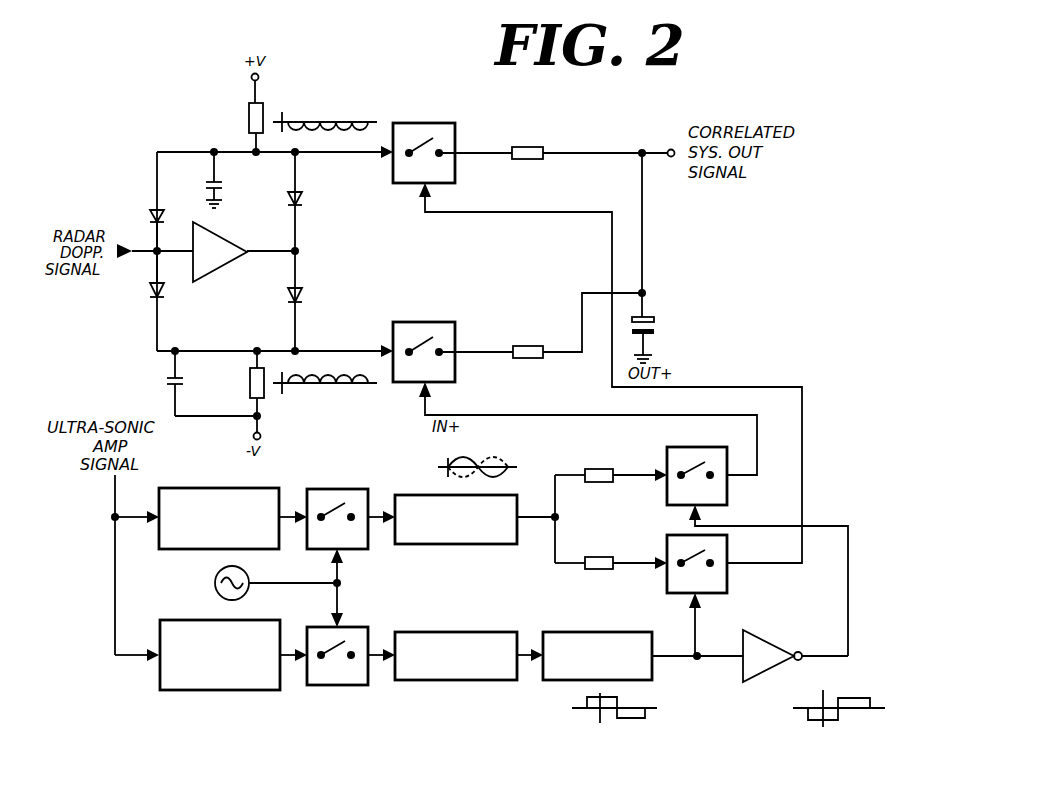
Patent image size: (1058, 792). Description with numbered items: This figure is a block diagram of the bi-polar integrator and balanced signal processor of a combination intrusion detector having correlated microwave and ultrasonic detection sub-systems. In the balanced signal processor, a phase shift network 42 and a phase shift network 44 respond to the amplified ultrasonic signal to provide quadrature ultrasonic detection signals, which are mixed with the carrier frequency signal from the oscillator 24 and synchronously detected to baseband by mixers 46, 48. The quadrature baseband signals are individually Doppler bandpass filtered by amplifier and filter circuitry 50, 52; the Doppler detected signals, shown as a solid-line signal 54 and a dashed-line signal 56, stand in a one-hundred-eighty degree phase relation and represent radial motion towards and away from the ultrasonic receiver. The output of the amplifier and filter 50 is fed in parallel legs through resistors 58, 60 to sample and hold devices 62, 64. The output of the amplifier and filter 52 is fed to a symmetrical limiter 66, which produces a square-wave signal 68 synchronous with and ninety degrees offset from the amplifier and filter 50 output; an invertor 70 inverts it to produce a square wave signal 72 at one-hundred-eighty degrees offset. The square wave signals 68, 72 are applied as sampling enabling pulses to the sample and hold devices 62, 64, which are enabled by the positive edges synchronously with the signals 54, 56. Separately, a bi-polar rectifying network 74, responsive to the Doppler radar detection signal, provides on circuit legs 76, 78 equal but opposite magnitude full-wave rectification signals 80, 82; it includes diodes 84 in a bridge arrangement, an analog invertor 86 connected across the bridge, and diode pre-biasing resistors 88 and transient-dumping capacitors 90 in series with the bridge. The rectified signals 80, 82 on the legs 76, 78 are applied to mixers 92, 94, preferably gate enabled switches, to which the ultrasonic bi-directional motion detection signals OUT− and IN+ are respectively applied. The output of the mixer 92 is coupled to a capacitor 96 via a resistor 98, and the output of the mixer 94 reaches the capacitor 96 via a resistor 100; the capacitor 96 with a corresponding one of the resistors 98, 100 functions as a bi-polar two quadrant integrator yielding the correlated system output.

The oscillator 24 is at (247, 575).
The phase shift network 42 is at (208, 488).
The phase shift network 44 is at (196, 620).
The mixer 46 is at (322, 489).
The mixer 48 is at (350, 627).
The amplifier and filter circuitry 50 is at (425, 495).
The amplifier and filter circuitry 52 is at (465, 632).
The Doppler detected signal 54 is at (462, 458).
The Doppler detected signal 56 is at (500, 460).
The resistor 58 is at (594, 469).
The resistor 60 is at (598, 557).
The sample and hold device 62 is at (695, 447).
The sample and hold device 64 is at (680, 535).
The symmetrical limiter 66 is at (585, 632).
The square-wave signal 68 is at (590, 697).
The invertor 70 is at (763, 637).
The square wave signal 72 is at (866, 696).
The bi-polar rectifying network 74 is at (238, 298).
The circuit leg 76 is at (330, 157).
The circuit leg 78 is at (320, 351).
The full-wave rectification signal 80 is at (300, 122).
The full-wave rectification signal 82 is at (340, 383).
The diodes 84 is at (302, 202).
The analog invertor 86 is at (220, 238).
The diode pre-biasing resistors 88 is at (262, 116).
The transient-dumping capacitors 90 is at (165, 381).
The mixer 92 is at (418, 123).
The mixer 94 is at (418, 322).
The capacitor 96 is at (656, 322).
The resistor 98 is at (523, 147).
The resistor 100 is at (523, 347).